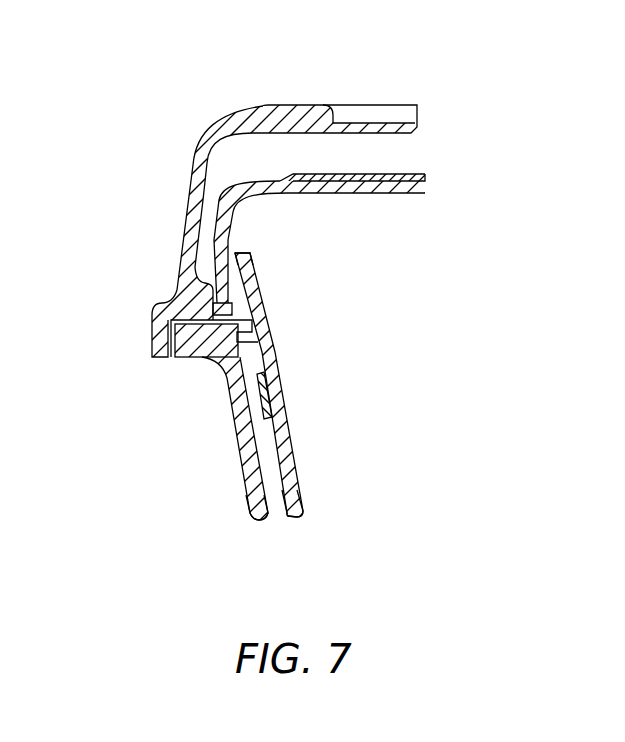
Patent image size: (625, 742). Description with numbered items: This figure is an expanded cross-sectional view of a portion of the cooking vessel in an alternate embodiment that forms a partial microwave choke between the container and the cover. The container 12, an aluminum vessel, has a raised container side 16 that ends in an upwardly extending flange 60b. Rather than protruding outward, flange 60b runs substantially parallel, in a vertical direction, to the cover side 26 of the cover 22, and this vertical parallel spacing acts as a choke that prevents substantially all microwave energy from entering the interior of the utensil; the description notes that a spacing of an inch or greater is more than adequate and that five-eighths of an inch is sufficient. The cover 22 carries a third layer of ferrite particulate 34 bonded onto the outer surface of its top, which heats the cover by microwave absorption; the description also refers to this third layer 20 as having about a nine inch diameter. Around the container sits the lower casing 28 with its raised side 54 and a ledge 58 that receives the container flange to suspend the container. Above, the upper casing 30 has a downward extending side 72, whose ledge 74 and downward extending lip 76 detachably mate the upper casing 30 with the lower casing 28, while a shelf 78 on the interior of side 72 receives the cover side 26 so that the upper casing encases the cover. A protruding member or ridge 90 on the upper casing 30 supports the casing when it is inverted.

The container 12 is at (295, 448).
The container side 16 is at (275, 356).
The third layer 20 is at (245, 402).
The cover 22 is at (264, 176).
The cover side 26 is at (212, 250).
The lower casing 28 is at (247, 500).
The upper casing 30 is at (204, 142).
The third layer of ferrite particulate 34 is at (387, 172).
The raised side 54 is at (250, 463).
The ledge 58 is at (262, 305).
The flange 60b is at (256, 272).
The downward extending side 72 is at (207, 238).
The ledge 74 is at (180, 297).
The downward extending lip 76 is at (158, 335).
The shelf 78 is at (220, 302).
The protruding member or ridge 90 is at (290, 104).